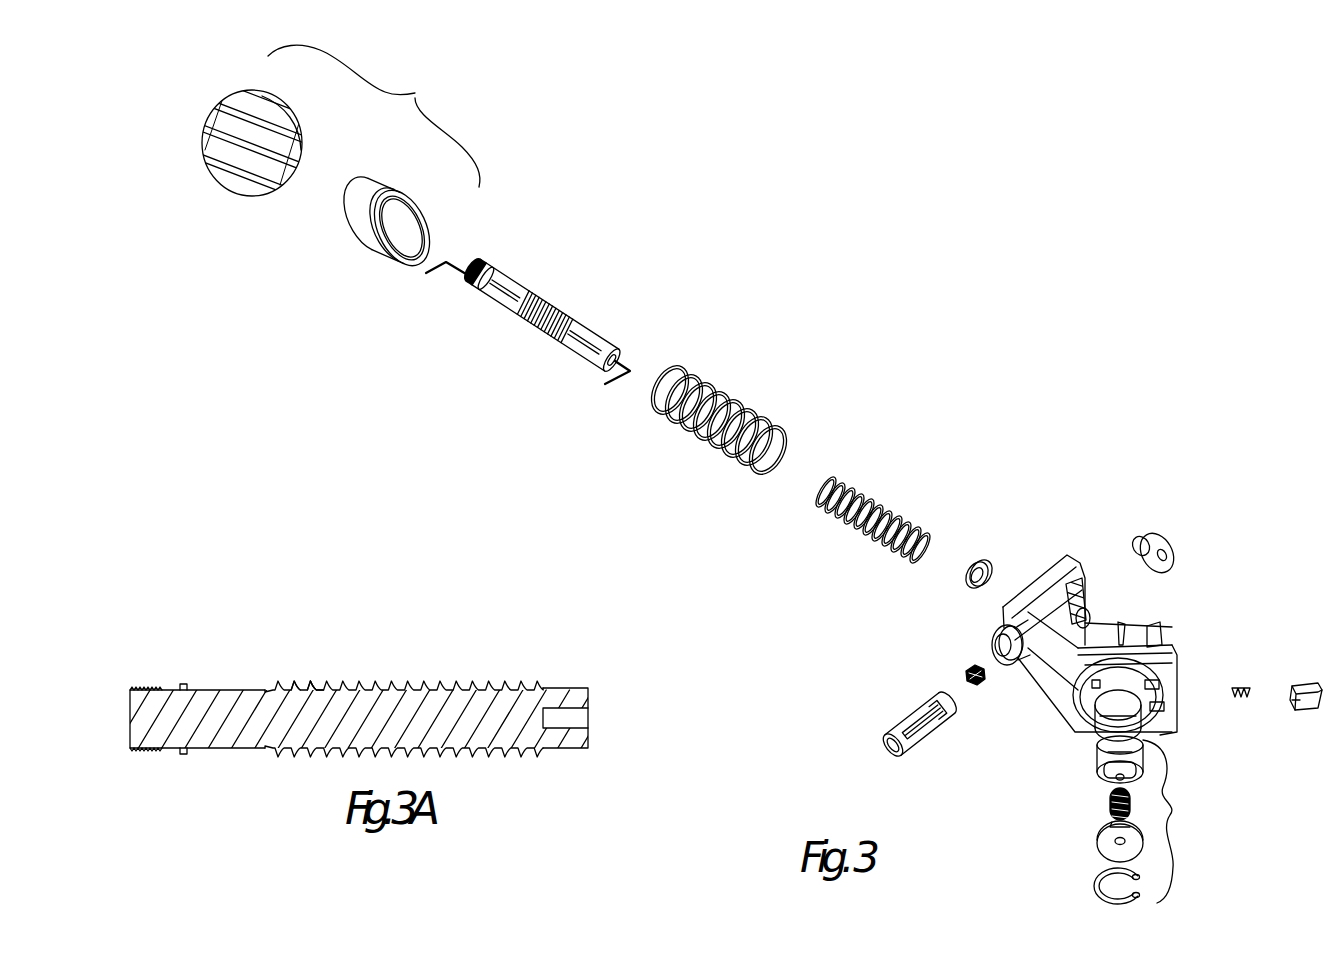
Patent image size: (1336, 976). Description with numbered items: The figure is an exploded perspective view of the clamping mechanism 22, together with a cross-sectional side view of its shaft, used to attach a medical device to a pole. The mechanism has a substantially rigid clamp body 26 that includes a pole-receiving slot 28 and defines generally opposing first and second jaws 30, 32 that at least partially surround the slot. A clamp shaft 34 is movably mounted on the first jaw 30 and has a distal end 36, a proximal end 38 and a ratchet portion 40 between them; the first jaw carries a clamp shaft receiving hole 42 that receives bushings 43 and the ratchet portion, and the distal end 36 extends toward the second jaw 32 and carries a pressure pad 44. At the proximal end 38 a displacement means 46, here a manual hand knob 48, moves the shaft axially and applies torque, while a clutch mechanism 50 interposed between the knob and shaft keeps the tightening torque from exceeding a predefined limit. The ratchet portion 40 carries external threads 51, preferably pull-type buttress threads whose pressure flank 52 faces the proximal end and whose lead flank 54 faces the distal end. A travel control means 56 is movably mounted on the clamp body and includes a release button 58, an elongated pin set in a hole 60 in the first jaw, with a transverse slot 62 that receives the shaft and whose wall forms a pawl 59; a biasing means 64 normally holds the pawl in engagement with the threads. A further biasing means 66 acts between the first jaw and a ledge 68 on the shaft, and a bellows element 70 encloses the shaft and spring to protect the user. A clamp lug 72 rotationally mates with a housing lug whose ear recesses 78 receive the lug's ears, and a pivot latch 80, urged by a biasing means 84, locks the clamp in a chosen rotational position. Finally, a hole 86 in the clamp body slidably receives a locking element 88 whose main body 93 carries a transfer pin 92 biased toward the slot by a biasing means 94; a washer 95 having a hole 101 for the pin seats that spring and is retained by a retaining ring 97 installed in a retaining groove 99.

In FIG. 3, the clamping mechanism 22 is at (1050, 341).
In FIG. 3, the clamp body 26 is at (1068, 720).
In FIG. 3, the pole-receiving slot 28 is at (1121, 627).
In FIG. 3, the first jaw 30 is at (1067, 557).
In FIG. 3, the second jaw 32 is at (1153, 629).
In FIG. 3, the clamp shaft 34 is at (529, 321).
In FIG. 3A, the clamp shaft 34 is at (367, 685).
In FIG. 3, the distal end 36 is at (628, 356).
In FIG. 3A, the distal end 36 is at (590, 695).
In FIG. 3, the proximal end 38 is at (473, 260).
In FIG. 3A, the proximal end 38 is at (130, 700).
In FIG. 3, the ratchet portion 40 is at (540, 328).
In FIG. 3, the clamp shaft receiving hole 42 is at (1073, 578).
In FIG. 3, the bushings 43 is at (988, 563).
In FIG. 3, the pressure pad 44 is at (1170, 534).
In FIG. 3, the displacement means 46 is at (374, 116).
In FIG. 3, the hand knob 48 is at (285, 112).
In FIG. 3, the clutch mechanism 50 is at (410, 187).
In FIG. 3A, the external threads 51 is at (310, 682).
In FIG. 3A, the pressure flank 52 is at (300, 682).
In FIG. 3A, the lead flank 54 is at (314, 682).
In FIG. 3, the travel control means 56 is at (924, 745).
In FIG. 3, the release button 58 is at (924, 746).
In FIG. 3, the pawl 59 is at (937, 723).
In FIG. 3, the hole 60 is at (993, 652).
In FIG. 3, the slot 62 is at (910, 748).
In FIG. 3, the biasing means 64 is at (979, 682).
In FIG. 3, the biasing means 66 is at (877, 502).
In FIG. 3A, the ledge 68 is at (186, 683).
In FIG. 3, the bellows element 70 is at (722, 390).
In FIG. 3, the clamp lug 72 is at (1097, 735).
In FIG. 3, the ear recesses 78 is at (1153, 690).
In FIG. 3, the pivot latch 80 is at (1300, 710).
In FIG. 3, the biasing means 84 is at (1239, 700).
In FIG. 3, the hole 86 is at (1145, 742).
In FIG. 3, the locking element 88 is at (1174, 821).
In FIG. 3, the transfer pin 92 is at (1110, 810).
In FIG. 3, the main body 93 is at (1103, 755).
In FIG. 3, the biasing means 94 is at (1110, 827).
In FIG. 3, the washer 95 is at (1143, 853).
In FIG. 3, the retaining ring 97 is at (1103, 893).
In FIG. 3, the retaining groove 99 is at (1100, 740).
In FIG. 3, the hole 101 is at (1117, 845).